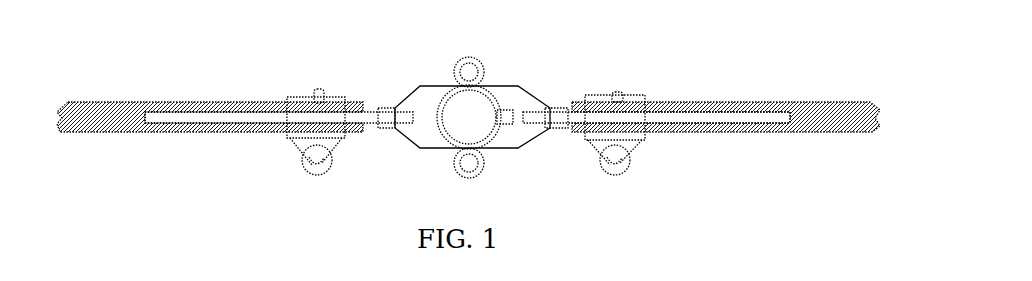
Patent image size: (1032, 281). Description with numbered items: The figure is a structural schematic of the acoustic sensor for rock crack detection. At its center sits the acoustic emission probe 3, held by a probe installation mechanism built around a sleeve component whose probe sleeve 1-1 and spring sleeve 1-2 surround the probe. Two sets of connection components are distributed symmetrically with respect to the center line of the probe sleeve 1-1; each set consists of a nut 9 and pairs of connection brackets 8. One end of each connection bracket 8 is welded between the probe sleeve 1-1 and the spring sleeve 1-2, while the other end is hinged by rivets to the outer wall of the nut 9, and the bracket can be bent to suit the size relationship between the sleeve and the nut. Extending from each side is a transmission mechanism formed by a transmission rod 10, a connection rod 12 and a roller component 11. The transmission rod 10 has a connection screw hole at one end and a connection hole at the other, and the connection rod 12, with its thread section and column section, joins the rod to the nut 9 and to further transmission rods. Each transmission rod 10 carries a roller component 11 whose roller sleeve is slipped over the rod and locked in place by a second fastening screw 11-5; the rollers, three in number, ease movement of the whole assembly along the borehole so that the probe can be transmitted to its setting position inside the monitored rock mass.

The probe sleeve 1-1 is at (450, 97).
The spring sleeve 1-2 is at (462, 60).
The acoustic emission probe 3 is at (458, 125).
The connection bracket 8 is at (500, 85).
The nut 9 is at (548, 110).
The transmission rod 10 is at (658, 107).
The roller component 11 is at (630, 157).
The second fastening screw 11-5 is at (317, 97).
The connection rod 12 is at (688, 116).